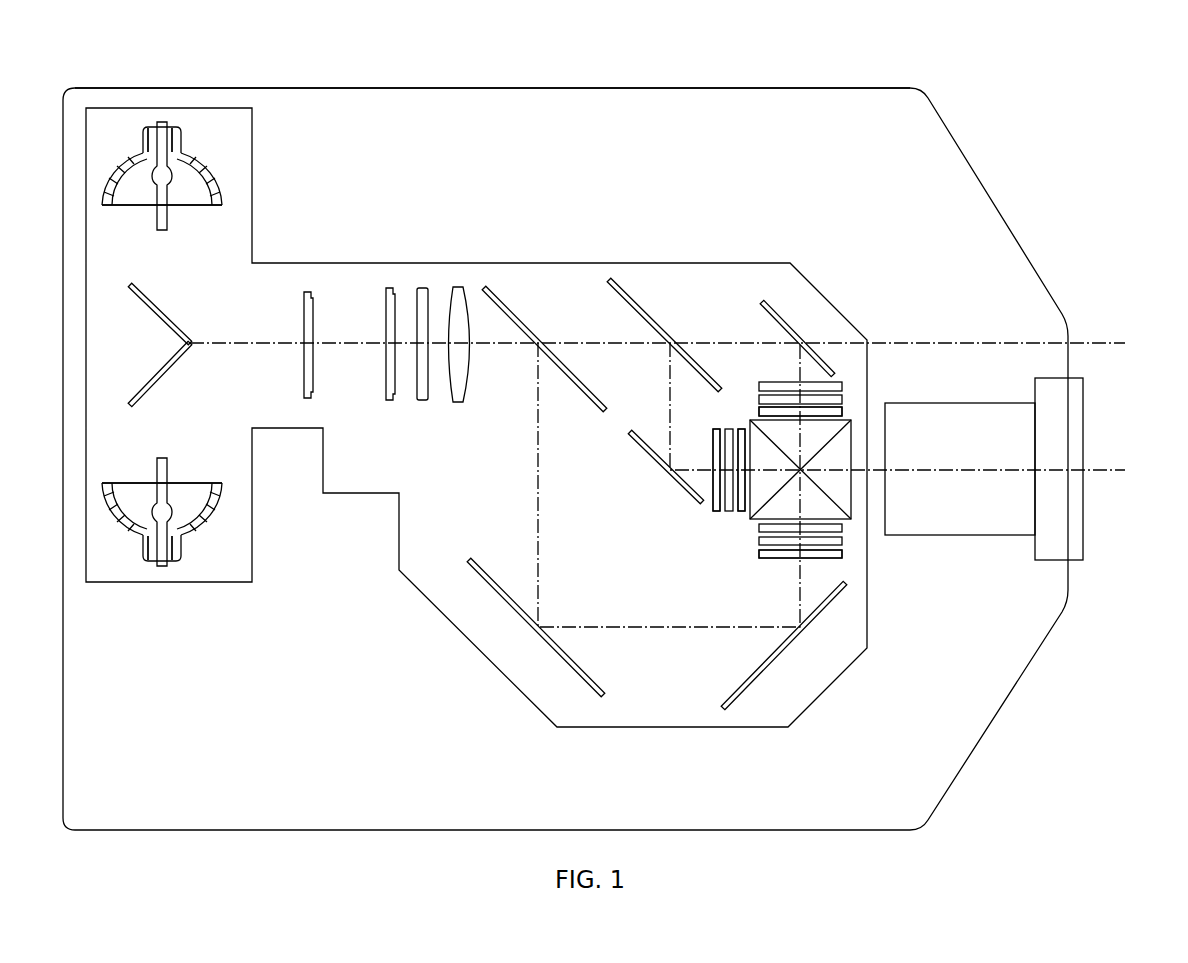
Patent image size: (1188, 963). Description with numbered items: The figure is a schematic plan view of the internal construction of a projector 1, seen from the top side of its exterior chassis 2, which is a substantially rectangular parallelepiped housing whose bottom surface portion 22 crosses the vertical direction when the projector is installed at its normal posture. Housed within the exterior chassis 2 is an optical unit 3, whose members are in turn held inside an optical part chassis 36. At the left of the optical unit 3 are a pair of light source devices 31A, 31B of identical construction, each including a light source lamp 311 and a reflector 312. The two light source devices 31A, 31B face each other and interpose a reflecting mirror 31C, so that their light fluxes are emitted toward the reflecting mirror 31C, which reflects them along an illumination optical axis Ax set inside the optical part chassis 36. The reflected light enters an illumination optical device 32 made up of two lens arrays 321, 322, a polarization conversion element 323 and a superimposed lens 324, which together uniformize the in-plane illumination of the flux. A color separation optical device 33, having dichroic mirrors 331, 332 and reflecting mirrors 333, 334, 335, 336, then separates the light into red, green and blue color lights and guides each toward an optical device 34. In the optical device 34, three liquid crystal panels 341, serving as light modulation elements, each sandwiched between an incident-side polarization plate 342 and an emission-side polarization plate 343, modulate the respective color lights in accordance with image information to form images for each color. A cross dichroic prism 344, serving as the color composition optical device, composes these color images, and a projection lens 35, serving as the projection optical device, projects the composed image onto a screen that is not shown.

The projector 1 is at (1129, 186).
The exterior chassis 2 is at (958, 145).
The bottom surface portion 22 is at (622, 92).
The optical unit 3 is at (685, 180).
The light source device 31A is at (324, 521).
The light source device 31B is at (339, 117).
The reflecting mirror 31C is at (149, 394).
The light source lamp 311 is at (178, 143).
The reflector 312 is at (204, 172).
The illumination optical device 32 is at (292, 203).
The lens array 321 is at (310, 292).
The lens array 322 is at (387, 288).
The polarization conversion element 323 is at (424, 288).
The superimposed lens 324 is at (462, 287).
The color separation optical device 33 is at (767, 282).
The dichroic mirror 331 is at (513, 315).
The dichroic mirror 332 is at (648, 312).
The reflecting mirror 333 is at (482, 558).
The reflecting mirror 334 is at (776, 660).
The reflecting mirror 335 is at (652, 455).
The reflecting mirror 336 is at (778, 311).
The optical device 34 is at (846, 350).
The liquid crystal panel 341 is at (843, 387).
The incident-side polarization plate 342 is at (716, 428).
The emission-side polarization plate 343 is at (843, 409).
The cross dichroic prism 344 is at (846, 452).
The projection lens 35 is at (1012, 402).
The optical part chassis 36 is at (650, 728).
The illumination optical axis Ax is at (497, 348).